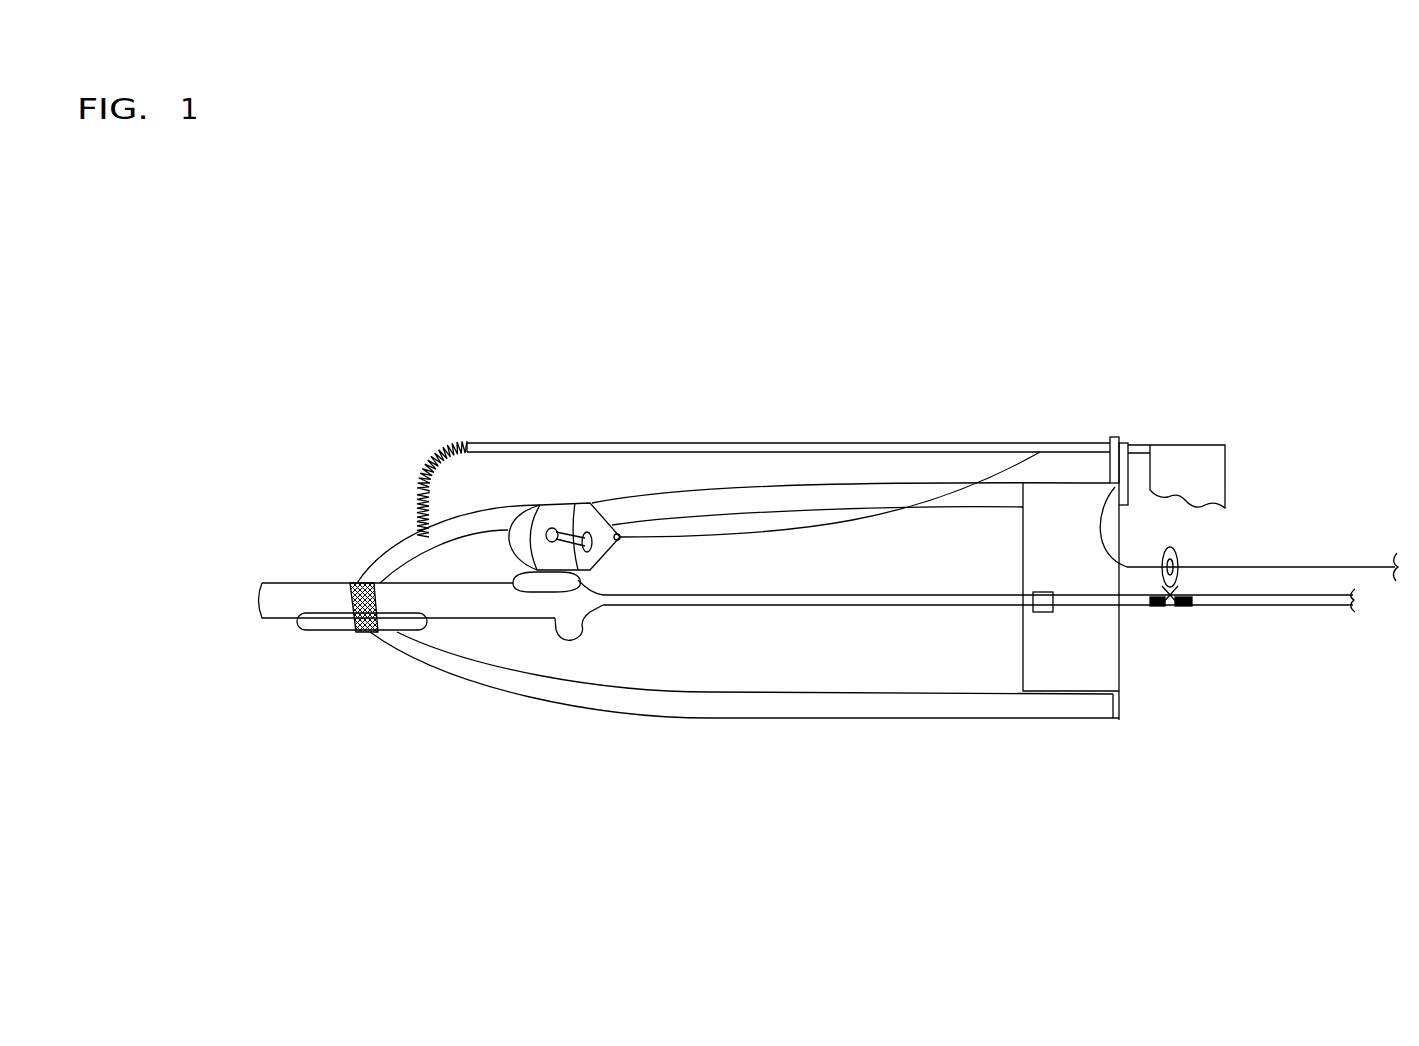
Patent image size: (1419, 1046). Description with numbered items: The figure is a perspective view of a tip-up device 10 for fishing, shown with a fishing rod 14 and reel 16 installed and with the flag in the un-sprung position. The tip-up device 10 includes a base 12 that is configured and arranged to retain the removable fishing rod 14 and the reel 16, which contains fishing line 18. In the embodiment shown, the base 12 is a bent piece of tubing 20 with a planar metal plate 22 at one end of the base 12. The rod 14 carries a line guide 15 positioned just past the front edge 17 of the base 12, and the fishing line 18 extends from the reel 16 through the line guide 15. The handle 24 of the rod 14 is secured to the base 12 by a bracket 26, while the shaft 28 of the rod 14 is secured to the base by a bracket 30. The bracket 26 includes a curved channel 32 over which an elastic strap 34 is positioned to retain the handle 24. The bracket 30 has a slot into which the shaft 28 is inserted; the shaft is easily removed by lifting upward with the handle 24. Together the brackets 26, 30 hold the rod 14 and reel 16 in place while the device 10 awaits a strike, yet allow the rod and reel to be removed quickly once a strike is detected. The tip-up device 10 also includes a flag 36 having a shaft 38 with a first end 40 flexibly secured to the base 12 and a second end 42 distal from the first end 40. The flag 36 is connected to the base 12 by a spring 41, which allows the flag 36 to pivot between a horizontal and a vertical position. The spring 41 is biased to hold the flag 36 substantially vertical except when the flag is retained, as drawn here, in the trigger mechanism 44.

The tip-up device 10 is at (744, 758).
The base 12 is at (744, 718).
The fishing rod 14 is at (798, 644).
The line guide 15 is at (1178, 557).
The reel 16 is at (557, 513).
The front edge 17 is at (1120, 625).
The fishing line 18 is at (887, 517).
The tubing 20 is at (848, 710).
The planar metal plate 22 is at (1129, 601).
The handle 24 is at (473, 603).
The bracket 26 is at (317, 628).
The shaft 28 is at (940, 600).
The bracket 30 is at (1043, 608).
The curved channel 32 is at (343, 620).
The elastic strap 34 is at (355, 593).
The flag 36 is at (1007, 443).
The shaft 38 is at (838, 448).
The first end 40 is at (425, 473).
The spring 41 is at (442, 472).
The second end 42 is at (1140, 445).
The trigger mechanism 44 is at (1122, 445).